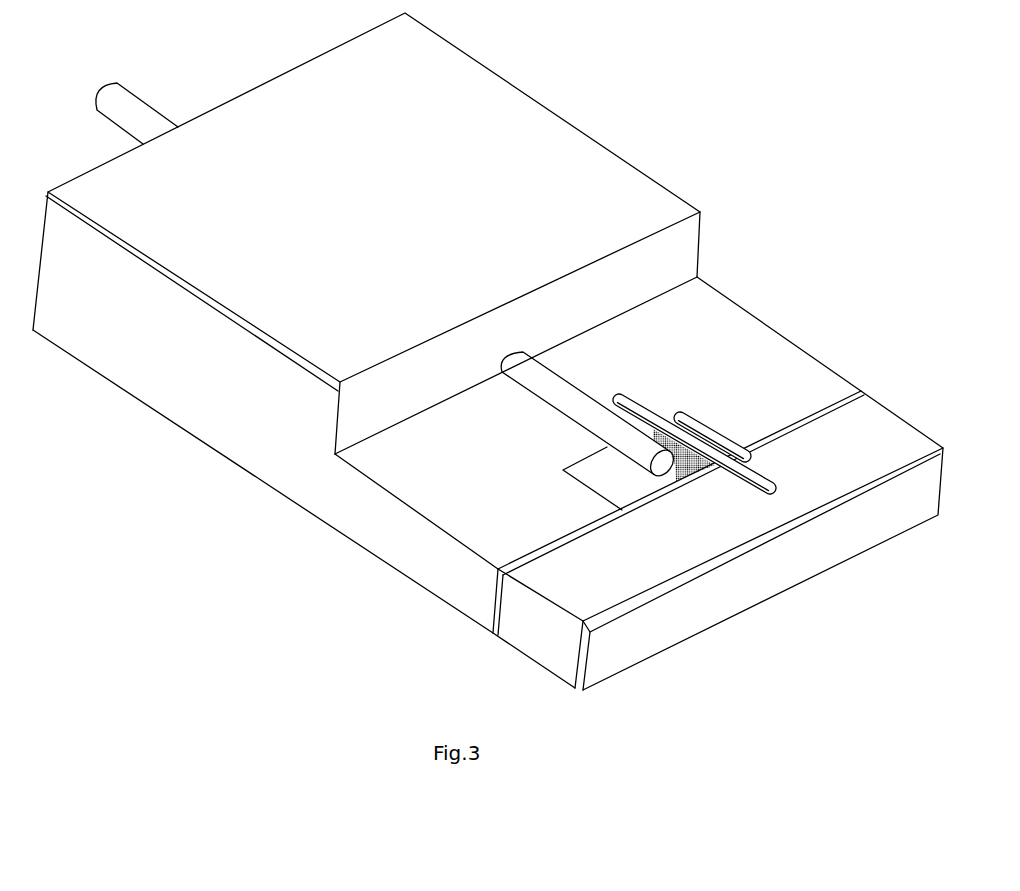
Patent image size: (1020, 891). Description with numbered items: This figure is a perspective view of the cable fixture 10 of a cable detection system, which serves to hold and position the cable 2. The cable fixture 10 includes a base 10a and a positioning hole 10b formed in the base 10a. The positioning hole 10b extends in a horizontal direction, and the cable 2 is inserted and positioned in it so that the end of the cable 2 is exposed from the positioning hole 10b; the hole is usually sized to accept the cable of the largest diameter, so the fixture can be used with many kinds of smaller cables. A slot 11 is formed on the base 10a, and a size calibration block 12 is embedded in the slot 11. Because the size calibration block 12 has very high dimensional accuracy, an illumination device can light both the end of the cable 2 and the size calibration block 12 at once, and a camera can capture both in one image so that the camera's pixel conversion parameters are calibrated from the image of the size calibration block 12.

The cable fixture 10 is at (562, 165).
The base 10a is at (223, 380).
The positioning hole 10b is at (524, 354).
The slot 11 is at (620, 393).
The size calibration block 12 is at (708, 440).
The cable 2 is at (590, 415).